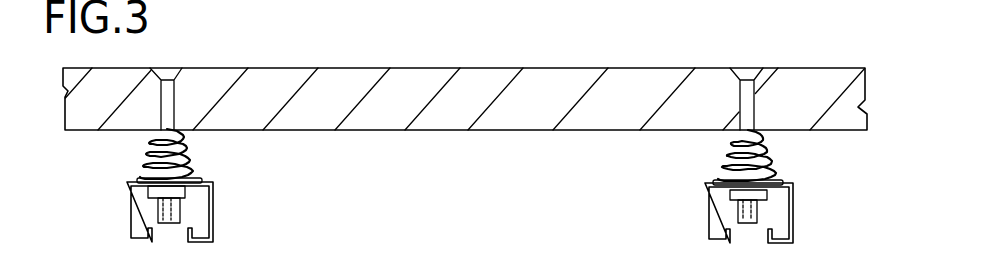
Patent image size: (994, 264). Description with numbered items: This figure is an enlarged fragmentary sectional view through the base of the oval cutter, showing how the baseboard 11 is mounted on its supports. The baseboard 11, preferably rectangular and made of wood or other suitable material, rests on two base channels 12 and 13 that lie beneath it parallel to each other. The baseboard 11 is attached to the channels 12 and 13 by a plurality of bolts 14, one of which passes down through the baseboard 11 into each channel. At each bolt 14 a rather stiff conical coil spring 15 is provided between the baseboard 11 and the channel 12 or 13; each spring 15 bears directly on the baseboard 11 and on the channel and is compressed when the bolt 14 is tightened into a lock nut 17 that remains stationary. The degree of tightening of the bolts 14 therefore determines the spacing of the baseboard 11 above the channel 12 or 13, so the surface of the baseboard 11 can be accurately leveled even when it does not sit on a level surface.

The baseboard 11 is at (462, 108).
The base channel 12 is at (213, 215).
The base channel 13 is at (705, 213).
The bolt 14 is at (173, 103).
The conical coil spring 15 is at (193, 161).
The lock nut 17 is at (180, 200).